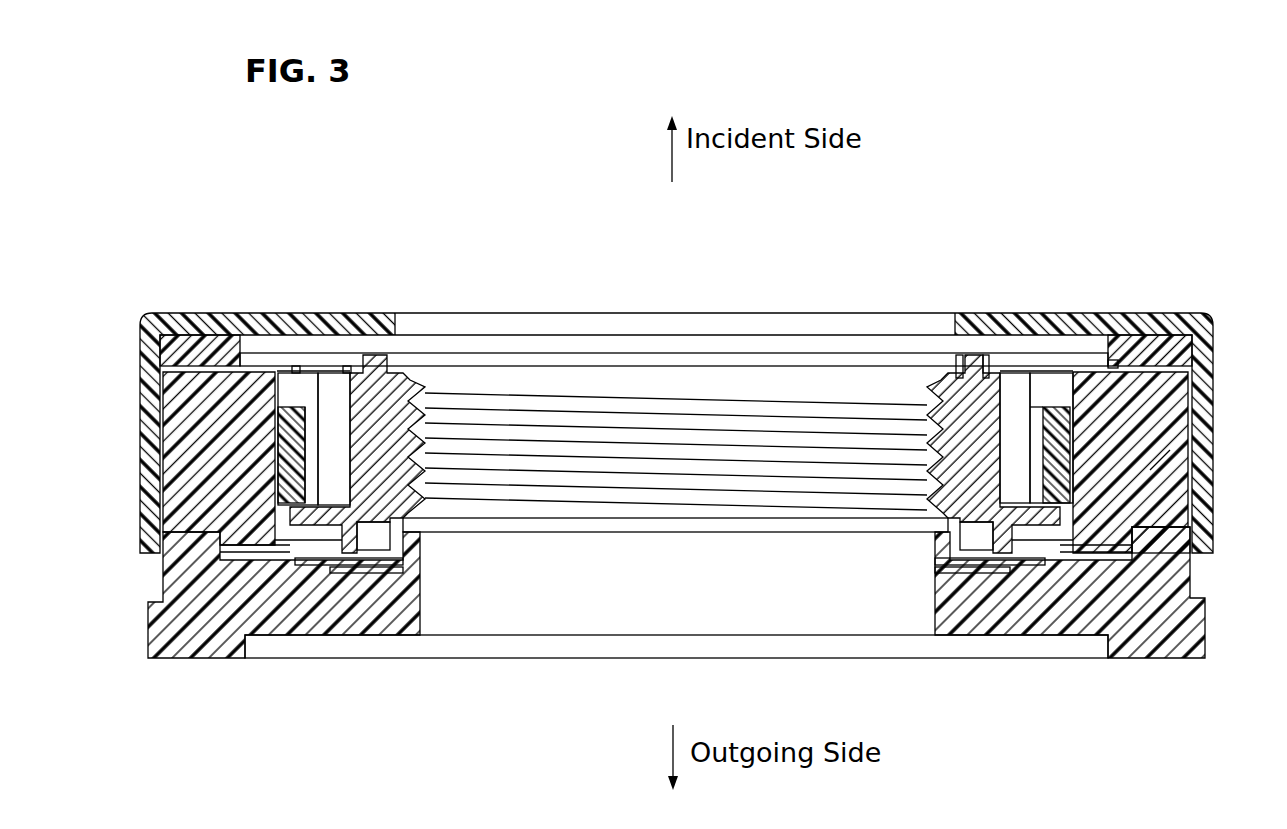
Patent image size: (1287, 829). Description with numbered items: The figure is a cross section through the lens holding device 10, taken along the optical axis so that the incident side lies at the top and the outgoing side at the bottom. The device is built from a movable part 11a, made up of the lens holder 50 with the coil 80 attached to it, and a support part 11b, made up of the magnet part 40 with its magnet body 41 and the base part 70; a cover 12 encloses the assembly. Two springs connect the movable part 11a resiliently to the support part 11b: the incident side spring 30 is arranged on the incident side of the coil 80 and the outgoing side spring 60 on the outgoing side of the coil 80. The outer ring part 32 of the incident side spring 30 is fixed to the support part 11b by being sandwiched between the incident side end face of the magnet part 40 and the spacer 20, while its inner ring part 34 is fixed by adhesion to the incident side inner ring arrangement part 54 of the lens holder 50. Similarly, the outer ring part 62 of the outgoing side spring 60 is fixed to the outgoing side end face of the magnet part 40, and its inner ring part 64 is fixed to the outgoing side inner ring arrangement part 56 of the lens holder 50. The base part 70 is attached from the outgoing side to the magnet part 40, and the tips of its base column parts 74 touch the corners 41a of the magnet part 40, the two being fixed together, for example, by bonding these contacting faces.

The lens holding device 10 is at (1032, 250).
The movable part 11a is at (347, 368).
The support part 11b is at (160, 583).
The cover 12 is at (1127, 350).
The spacer 20 is at (186, 317).
The incident side spring 30 is at (296, 368).
The outer ring part 32 is at (1113, 362).
The inner ring part 34 is at (958, 372).
The magnet part 40 is at (1156, 410).
The magnet body 41 is at (165, 452).
The corners 41a is at (1162, 456).
The lens holder 50 is at (416, 385).
The incident side inner ring arrangement part 54 is at (986, 368).
The outgoing side inner ring arrangement part 56 is at (1000, 540).
The outgoing side spring 60 is at (295, 557).
The outer ring part 62 is at (1118, 556).
The inner ring part 64 is at (370, 550).
The base part 70 is at (1147, 638).
The base column parts 74 is at (1178, 542).
The coil 80 is at (1052, 400).